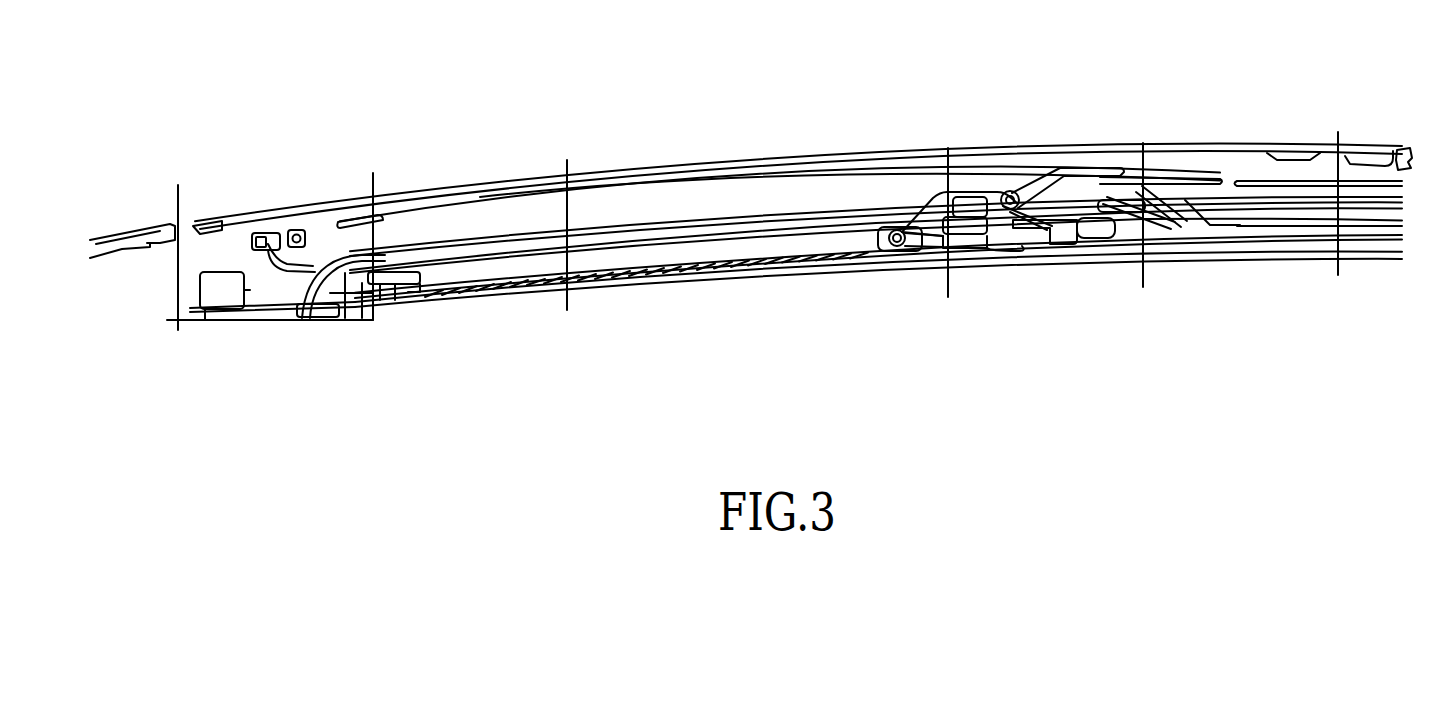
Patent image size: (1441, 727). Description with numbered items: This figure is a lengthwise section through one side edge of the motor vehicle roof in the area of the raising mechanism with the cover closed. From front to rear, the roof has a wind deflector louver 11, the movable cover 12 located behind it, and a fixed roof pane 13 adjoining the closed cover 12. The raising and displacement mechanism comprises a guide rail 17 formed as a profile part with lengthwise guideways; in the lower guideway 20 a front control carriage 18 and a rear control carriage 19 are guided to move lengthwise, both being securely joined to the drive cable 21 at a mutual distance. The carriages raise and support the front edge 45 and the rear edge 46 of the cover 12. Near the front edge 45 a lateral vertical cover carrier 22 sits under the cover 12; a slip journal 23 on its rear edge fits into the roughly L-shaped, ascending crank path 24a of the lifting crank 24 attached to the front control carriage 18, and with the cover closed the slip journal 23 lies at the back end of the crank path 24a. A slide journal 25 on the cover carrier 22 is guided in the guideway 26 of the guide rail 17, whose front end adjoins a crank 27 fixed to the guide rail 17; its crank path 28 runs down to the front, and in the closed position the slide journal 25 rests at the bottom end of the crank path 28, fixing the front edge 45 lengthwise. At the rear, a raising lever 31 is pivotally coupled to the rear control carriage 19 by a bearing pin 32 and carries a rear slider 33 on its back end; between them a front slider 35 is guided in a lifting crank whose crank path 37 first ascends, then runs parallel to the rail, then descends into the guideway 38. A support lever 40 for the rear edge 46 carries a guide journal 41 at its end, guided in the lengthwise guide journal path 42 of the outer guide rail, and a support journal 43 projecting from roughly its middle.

The wind deflector louver 11 is at (152, 222).
The cover 12 is at (700, 165).
The roof pane 13 is at (1400, 148).
The guide rail 17 is at (704, 280).
The front control carriage 18 is at (410, 284).
The rear control carriage 19 is at (882, 250).
The lower guideway 20 is at (623, 255).
The drive cable 21 is at (578, 283).
The cover carrier 22 is at (322, 238).
The slip journal 23 is at (380, 283).
The lifting crank 24 is at (250, 292).
The crank path 24a is at (267, 263).
The slide journal 25 is at (310, 317).
The slide journal guideway 26 is at (490, 247).
The crank 27 is at (357, 318).
The crank path 28 is at (370, 228).
The raising lever 31 is at (928, 189).
The bearing pin 32 is at (897, 250).
The rear slider 33 is at (1073, 190).
The front slider 35 is at (968, 234).
The crank path 37 is at (1183, 219).
The guideway 38 is at (1257, 233).
The support lever 40 is at (1043, 240).
The guide journal 41 is at (1190, 217).
The guide journal path 42 is at (1260, 192).
The support journal 43 is at (1102, 238).
The front edge 45 is at (192, 211).
The rear edge 46 is at (1386, 135).